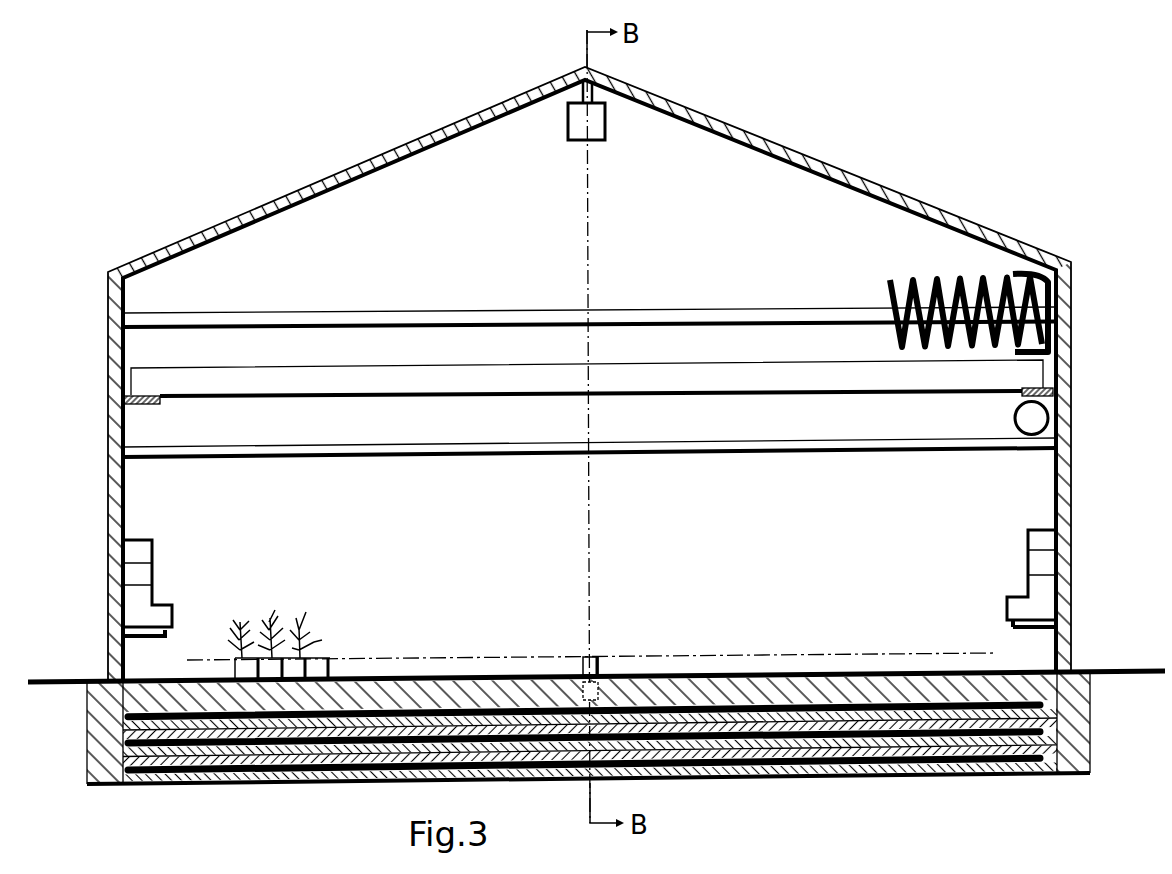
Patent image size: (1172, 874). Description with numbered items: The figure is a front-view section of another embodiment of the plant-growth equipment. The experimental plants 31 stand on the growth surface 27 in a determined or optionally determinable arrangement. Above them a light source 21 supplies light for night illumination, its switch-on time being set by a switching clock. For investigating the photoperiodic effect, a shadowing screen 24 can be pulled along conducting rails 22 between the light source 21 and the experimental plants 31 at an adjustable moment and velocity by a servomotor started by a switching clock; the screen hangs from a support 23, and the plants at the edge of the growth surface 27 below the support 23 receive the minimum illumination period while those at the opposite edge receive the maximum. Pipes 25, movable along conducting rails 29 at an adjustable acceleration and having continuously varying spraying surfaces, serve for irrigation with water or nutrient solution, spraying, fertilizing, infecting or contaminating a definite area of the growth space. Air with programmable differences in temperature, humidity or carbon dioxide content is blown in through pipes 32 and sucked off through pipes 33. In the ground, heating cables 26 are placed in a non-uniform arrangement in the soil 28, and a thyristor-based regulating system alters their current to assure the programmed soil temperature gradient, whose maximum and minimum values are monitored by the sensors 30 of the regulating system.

The light source 21 is at (593, 120).
The conducting rails 22 is at (714, 318).
The support of the screen 23 is at (1058, 303).
The shadowing screen 24 is at (1052, 341).
The pipes 25 is at (1033, 420).
The heating cables 26 is at (1043, 713).
The growth surface 27 is at (998, 660).
The soil 28 is at (1040, 683).
The conducting rails 29 is at (168, 450).
The sensors 30 is at (127, 752).
The experimental plants 31 is at (247, 673).
The pipes 32 is at (140, 553).
The pipes 33 is at (1040, 600).